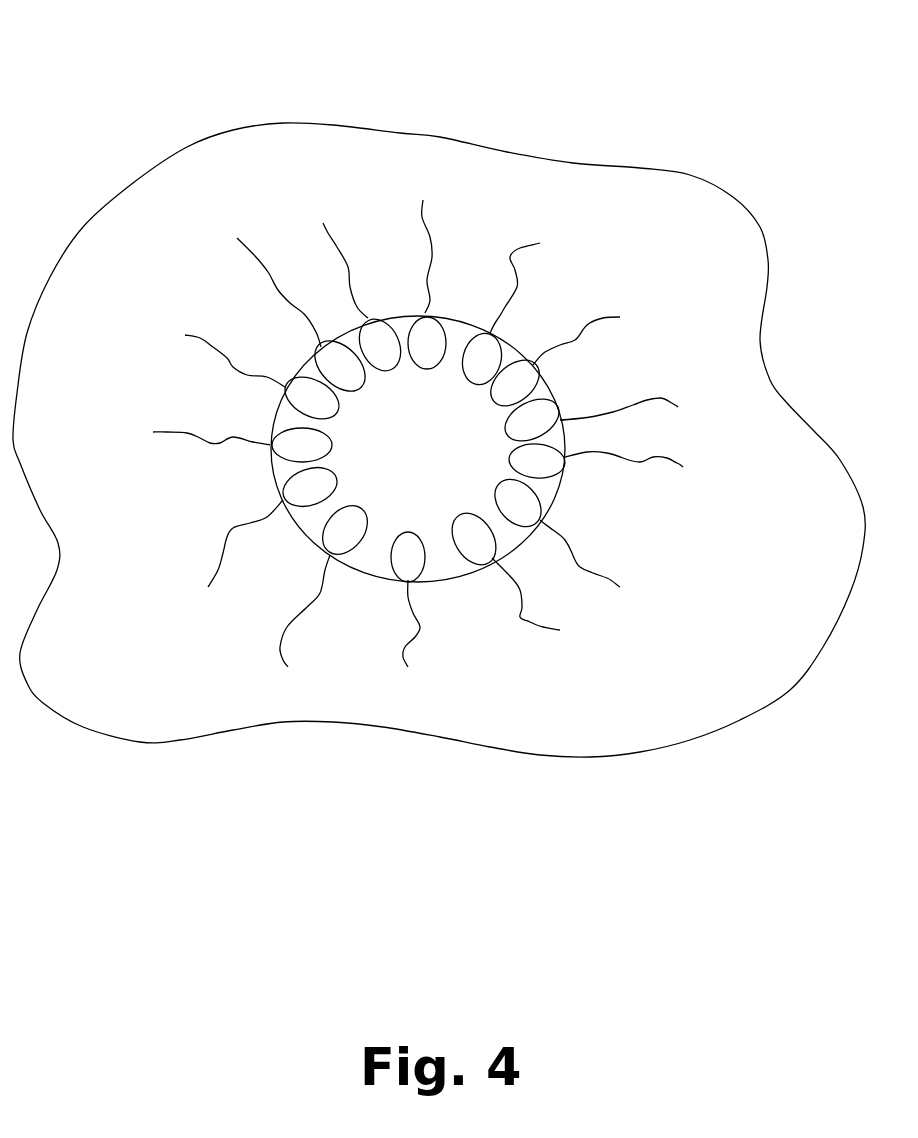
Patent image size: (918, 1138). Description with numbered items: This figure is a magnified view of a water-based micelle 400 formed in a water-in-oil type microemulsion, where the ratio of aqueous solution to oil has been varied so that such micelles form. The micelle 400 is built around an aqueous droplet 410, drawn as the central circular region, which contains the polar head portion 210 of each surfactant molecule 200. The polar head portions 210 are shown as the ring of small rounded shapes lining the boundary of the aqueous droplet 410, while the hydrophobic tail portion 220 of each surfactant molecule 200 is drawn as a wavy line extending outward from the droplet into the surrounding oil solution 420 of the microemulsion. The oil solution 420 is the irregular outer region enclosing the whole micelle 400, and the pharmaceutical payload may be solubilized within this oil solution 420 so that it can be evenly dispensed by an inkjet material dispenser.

The water-based micelle 400 is at (439, 382).
The oil solution 420 is at (142, 255).
The surfactant molecule 200 is at (575, 478).
The polar head portion 210 is at (518, 503).
The hydrophobic tail portion 220 is at (520, 613).
The aqueous droplet 410 is at (415, 448).